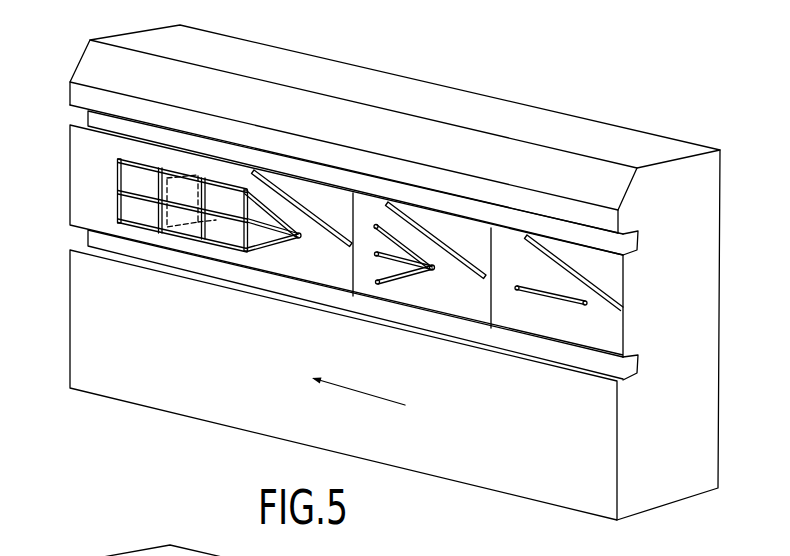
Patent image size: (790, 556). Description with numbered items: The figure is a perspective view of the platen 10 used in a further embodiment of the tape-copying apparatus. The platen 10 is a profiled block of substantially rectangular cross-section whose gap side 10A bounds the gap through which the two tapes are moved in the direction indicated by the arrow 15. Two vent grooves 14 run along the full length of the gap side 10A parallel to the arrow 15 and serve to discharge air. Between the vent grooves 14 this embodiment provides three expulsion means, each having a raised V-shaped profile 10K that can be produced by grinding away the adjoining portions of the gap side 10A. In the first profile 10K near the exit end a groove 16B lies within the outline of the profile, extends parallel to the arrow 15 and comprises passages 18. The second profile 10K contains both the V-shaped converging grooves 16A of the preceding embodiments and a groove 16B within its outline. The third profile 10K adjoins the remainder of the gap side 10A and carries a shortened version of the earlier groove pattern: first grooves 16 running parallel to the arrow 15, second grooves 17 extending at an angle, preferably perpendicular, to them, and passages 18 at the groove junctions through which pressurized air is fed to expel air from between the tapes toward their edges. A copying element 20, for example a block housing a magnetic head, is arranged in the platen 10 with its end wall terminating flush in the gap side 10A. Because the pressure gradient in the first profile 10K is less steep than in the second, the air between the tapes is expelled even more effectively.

The platen 10 is at (312, 70).
The gap side 10A is at (597, 493).
The raised profile 10K is at (325, 247).
The vent grooves 14 is at (633, 241).
The arrow 15 is at (363, 390).
The first grooves 16 is at (148, 182).
The V-shaped grooves 16A is at (285, 218).
The groove within the profile 16B is at (385, 252).
The second grooves 17 is at (117, 175).
The passages 18 is at (298, 240).
The copying element 20 is at (207, 163).